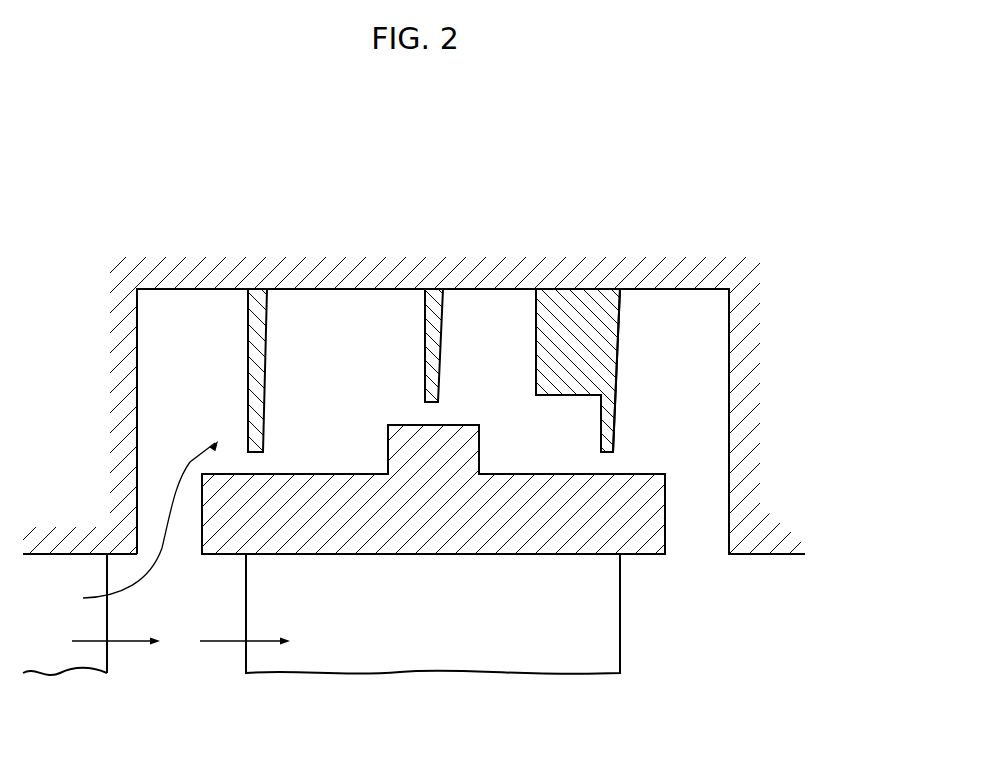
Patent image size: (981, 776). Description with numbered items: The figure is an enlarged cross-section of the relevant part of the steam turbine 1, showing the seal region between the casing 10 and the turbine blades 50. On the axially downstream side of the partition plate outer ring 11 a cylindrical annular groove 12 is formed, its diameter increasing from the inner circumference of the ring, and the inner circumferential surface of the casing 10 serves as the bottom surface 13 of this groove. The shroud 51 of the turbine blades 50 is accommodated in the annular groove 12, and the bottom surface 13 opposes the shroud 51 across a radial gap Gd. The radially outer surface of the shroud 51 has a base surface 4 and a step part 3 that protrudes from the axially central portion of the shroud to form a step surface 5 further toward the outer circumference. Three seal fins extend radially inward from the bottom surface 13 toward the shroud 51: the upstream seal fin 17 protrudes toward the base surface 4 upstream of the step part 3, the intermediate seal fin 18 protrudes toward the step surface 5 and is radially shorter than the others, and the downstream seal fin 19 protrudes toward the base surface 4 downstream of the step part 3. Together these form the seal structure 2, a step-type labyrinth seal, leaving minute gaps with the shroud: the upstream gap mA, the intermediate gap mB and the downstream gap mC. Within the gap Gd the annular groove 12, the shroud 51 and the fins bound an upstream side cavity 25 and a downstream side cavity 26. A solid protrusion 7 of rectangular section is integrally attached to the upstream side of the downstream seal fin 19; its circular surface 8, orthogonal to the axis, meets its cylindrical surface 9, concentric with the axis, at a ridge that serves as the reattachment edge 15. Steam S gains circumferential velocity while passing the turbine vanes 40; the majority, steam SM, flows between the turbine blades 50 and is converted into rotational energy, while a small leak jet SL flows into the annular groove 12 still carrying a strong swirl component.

The steam turbine 1 is at (709, 162).
The seal structure 2 is at (216, 353).
The step part 3 is at (408, 438).
The base surface 4 is at (310, 473).
The step surface 5 is at (467, 470).
The protrusion 7 is at (583, 307).
The circular surface 8 is at (536, 356).
The cylindrical surface 9 is at (568, 395).
The casing 10 is at (143, 230).
The partition plate outer ring 11 is at (54, 540).
The annular groove 12 is at (187, 560).
The bottom surface 13 is at (695, 290).
The reattachment edge 15 is at (536, 395).
The upstream seal fin 17 is at (266, 338).
The intermediate seal fin 18 is at (447, 336).
The downstream seal fin 19 is at (620, 337).
The upstream side cavity 25 is at (348, 340).
The downstream side cavity 26 is at (463, 340).
The turbine vanes 40 is at (67, 662).
The turbine blades 50 is at (612, 643).
The shroud 51 is at (656, 556).
The leak jet SL is at (132, 580).
The steam S is at (130, 650).
The steam (main flow) SM is at (210, 650).
The gap Gd is at (693, 385).
The upstream gap mA is at (265, 462).
The intermediate gap mB is at (439, 414).
The downstream gap mC is at (609, 462).